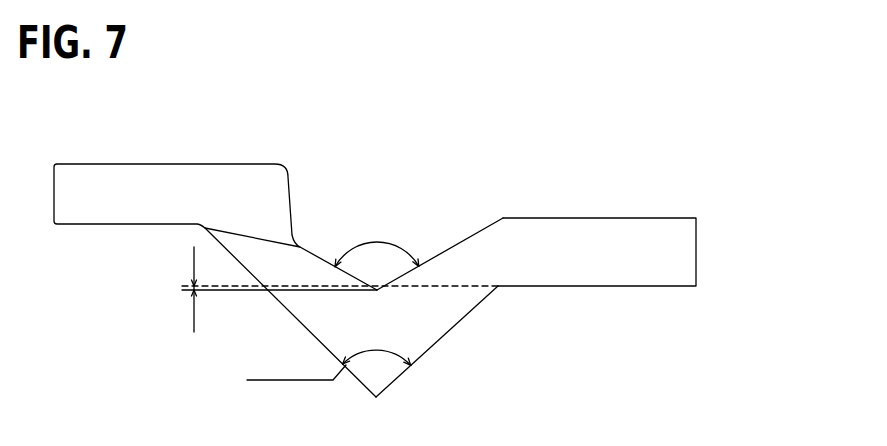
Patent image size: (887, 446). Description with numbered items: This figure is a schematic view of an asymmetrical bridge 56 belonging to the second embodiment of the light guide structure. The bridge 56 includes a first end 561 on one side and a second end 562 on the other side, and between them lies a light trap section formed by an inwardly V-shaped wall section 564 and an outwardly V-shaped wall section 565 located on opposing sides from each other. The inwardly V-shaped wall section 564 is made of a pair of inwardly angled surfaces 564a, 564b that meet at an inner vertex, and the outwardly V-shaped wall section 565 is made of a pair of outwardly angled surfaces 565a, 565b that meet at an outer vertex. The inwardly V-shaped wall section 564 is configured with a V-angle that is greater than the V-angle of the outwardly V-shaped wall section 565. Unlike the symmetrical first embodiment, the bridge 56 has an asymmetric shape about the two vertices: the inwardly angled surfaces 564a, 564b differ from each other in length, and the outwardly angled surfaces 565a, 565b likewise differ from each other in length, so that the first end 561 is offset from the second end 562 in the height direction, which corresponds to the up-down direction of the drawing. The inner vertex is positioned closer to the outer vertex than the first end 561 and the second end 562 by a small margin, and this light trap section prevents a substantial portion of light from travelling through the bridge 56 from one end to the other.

The bridge 56 is at (717, 152).
The first end 561 is at (100, 164).
The second end 562 is at (662, 218).
The inwardly V-shaped wall section 564 is at (485, 227).
The inwardly angled surface 564a is at (303, 245).
The inwardly angled surface 564b is at (445, 248).
The outwardly V-shaped wall section 565 is at (483, 300).
The outwardly angled surface 565a is at (277, 297).
The outwardly angled surface 565b is at (432, 348).